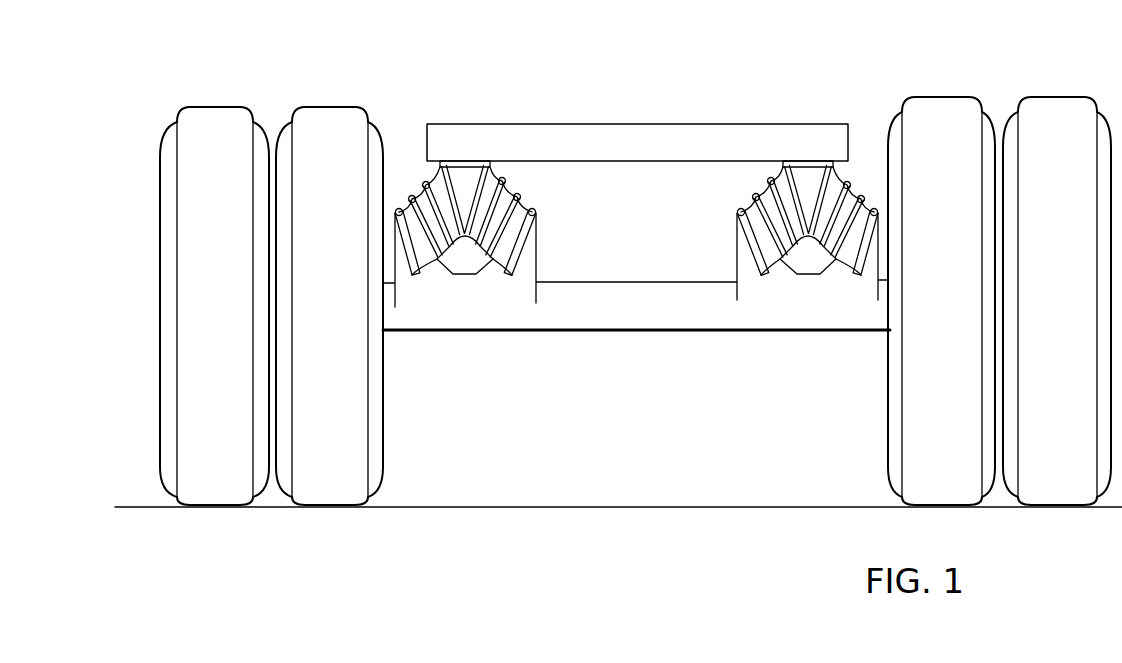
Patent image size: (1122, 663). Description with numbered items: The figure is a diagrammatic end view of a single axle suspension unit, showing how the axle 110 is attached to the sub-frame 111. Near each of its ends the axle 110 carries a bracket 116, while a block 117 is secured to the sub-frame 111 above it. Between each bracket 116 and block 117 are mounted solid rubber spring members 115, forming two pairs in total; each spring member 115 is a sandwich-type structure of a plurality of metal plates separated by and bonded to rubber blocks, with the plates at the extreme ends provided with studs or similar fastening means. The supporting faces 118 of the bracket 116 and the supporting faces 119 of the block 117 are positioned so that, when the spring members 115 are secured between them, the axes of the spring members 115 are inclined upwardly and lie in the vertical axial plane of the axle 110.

The axle 110 is at (632, 307).
The sub-frame 111 is at (612, 133).
The solid rubber spring member 115 is at (853, 190).
The bracket 116 is at (867, 272).
The block 117 is at (803, 172).
The supporting face 118 is at (747, 248).
The supporting face 119 is at (788, 166).